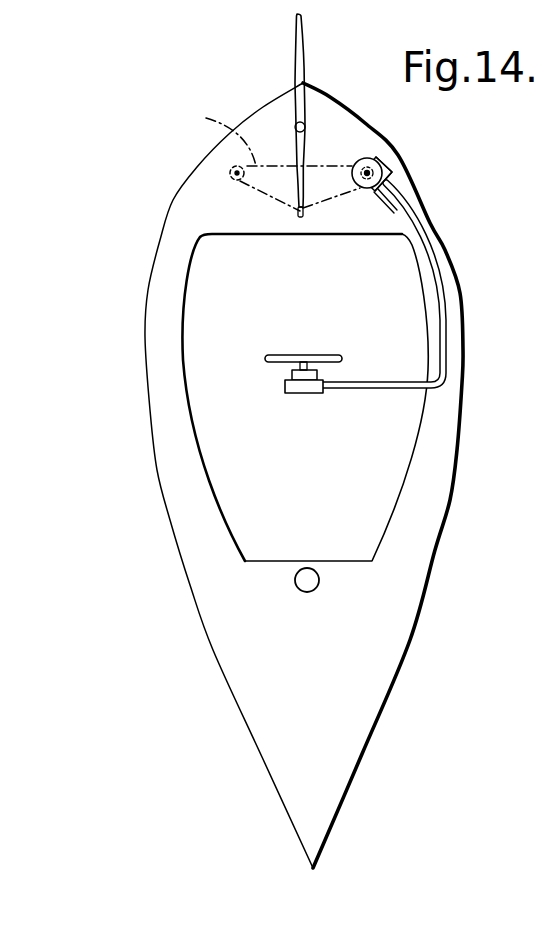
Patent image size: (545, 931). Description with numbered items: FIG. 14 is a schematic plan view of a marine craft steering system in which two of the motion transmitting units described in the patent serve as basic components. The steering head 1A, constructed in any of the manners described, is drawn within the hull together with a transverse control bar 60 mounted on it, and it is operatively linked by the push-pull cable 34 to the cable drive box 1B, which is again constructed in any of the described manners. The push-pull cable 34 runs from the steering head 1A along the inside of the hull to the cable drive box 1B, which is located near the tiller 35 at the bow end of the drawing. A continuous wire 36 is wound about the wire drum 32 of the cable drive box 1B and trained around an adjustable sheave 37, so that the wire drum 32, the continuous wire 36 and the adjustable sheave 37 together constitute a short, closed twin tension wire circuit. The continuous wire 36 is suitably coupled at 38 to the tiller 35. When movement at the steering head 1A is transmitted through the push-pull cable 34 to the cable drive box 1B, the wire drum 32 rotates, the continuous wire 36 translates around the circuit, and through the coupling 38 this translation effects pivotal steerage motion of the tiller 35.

The steering head 1A is at (294, 398).
The cable drive box 1B is at (393, 171).
The wire drum 32 is at (373, 167).
The push-pull cable 34 is at (440, 290).
The tiller 35 is at (303, 148).
The continuous wire 36 is at (215, 136).
The adjustable sheave 37 is at (230, 173).
The wire coupling to tiller 38 is at (298, 209).
The control bar 60 is at (330, 356).